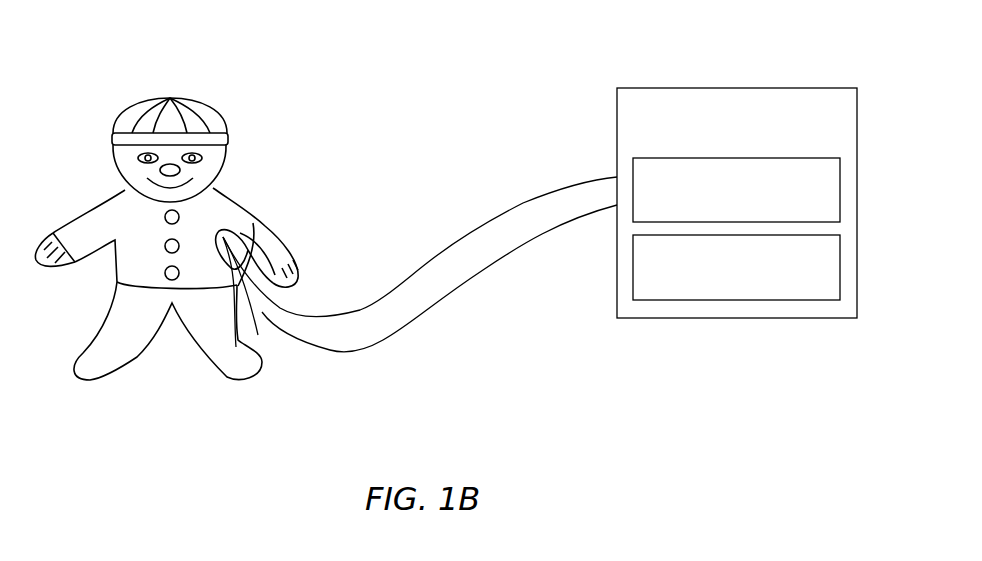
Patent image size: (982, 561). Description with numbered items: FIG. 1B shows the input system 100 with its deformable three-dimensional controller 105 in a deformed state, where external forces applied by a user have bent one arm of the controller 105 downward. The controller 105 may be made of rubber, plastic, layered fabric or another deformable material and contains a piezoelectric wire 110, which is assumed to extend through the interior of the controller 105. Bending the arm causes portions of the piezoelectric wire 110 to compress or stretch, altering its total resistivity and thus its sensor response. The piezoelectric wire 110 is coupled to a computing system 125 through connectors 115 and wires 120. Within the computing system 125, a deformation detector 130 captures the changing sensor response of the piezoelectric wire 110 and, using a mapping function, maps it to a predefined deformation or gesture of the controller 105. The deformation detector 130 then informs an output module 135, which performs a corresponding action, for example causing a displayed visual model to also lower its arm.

The input system 100 is at (509, 51).
The deformable 3D controller 105 is at (170, 98).
The piezoelectric wire 110 is at (263, 224).
The connectors 115 is at (287, 304).
The wires 120 is at (503, 220).
The computing system 125 is at (737, 203).
The deformation detector 130 is at (736, 190).
The output module 135 is at (736, 267).